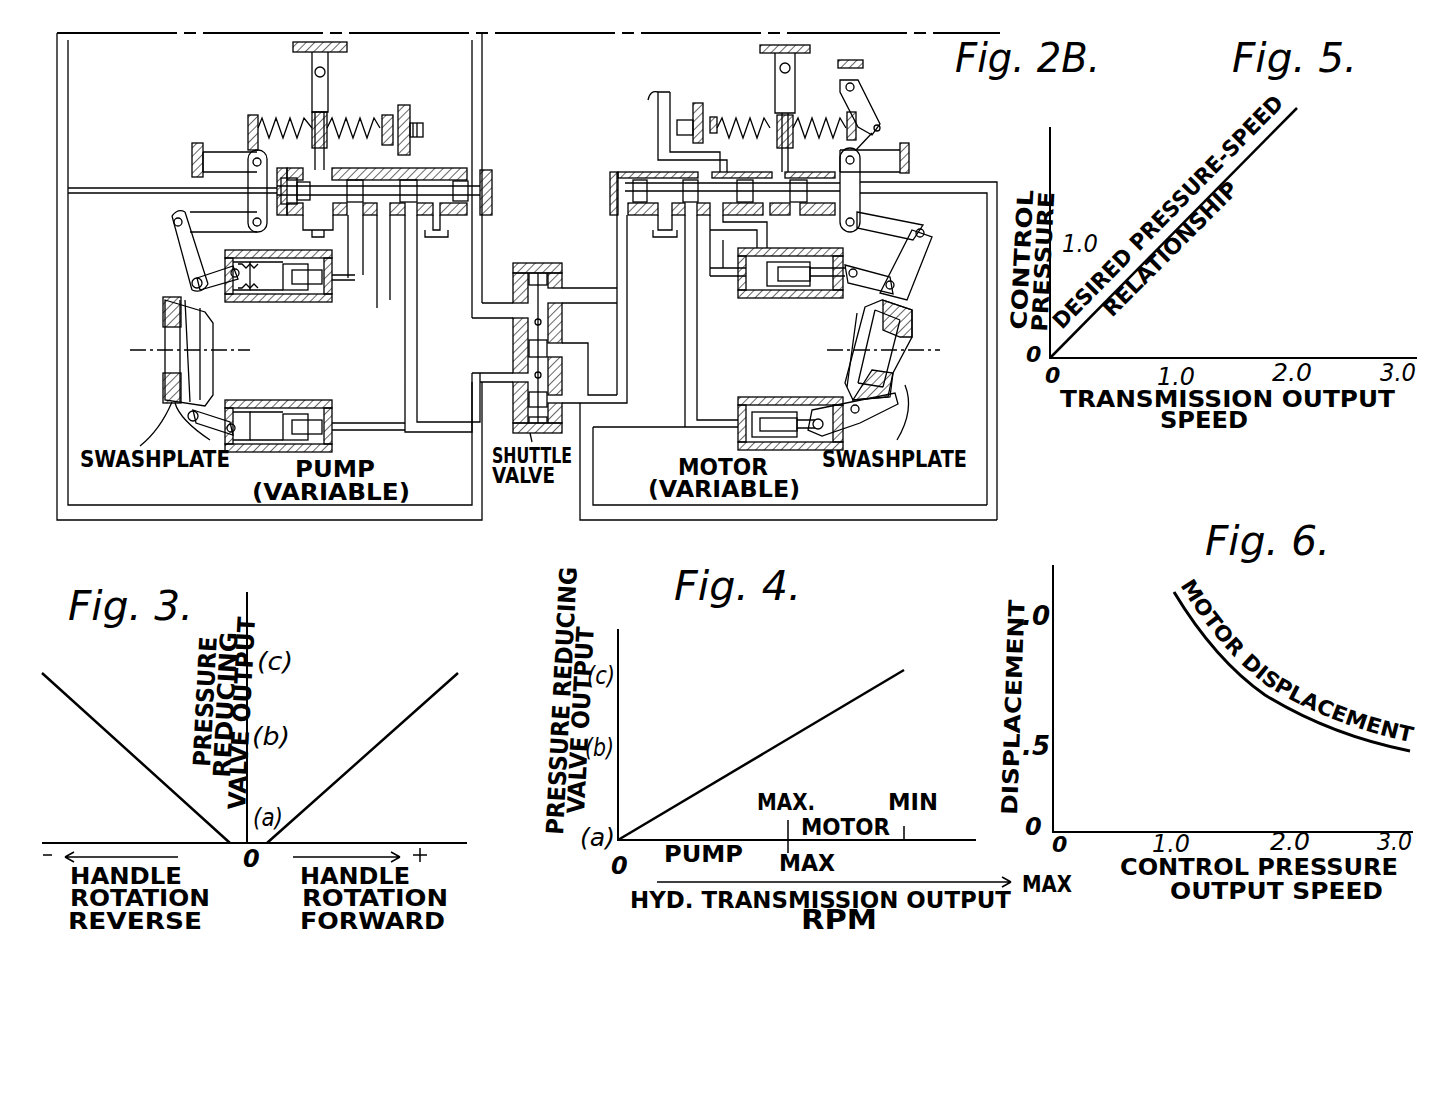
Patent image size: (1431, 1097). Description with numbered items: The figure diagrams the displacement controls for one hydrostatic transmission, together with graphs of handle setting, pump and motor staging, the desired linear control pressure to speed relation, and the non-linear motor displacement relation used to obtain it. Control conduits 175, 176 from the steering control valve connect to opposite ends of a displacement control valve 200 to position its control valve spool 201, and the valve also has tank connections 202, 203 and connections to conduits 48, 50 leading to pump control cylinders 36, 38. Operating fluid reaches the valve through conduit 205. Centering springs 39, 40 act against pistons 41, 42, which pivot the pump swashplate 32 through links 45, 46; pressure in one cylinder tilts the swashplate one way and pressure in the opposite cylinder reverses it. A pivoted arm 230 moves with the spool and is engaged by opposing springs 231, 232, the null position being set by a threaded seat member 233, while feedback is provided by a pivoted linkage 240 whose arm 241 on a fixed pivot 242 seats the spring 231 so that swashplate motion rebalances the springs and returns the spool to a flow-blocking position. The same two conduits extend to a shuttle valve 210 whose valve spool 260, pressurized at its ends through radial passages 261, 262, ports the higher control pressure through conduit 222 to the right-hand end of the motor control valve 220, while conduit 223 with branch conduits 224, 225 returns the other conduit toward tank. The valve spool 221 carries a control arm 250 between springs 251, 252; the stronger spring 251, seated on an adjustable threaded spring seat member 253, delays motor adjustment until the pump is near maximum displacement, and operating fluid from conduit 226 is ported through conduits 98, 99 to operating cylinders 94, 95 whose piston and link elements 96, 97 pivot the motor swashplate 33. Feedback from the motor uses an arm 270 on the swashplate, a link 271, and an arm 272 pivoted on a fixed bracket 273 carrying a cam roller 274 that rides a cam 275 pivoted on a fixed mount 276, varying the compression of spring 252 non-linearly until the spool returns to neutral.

The conduit 175 is at (70, 82).
The conduit 176 is at (478, 52).
The pivoted arm 230 is at (331, 68).
The spring 231 is at (280, 117).
The spring 232 is at (330, 120).
The threaded seat member 233 is at (393, 112).
The displacement control valve 200 is at (458, 168).
The arm 241 is at (250, 118).
The fixed pivot 242 is at (203, 150).
The control valve spool 201 is at (486, 190).
The pivoted linkage 240 is at (188, 214).
The tank connection 202 is at (312, 233).
The tank connection 203 is at (442, 237).
The link 45 is at (200, 276).
The pump swashplate 32 is at (165, 320).
The piston 41 is at (232, 302).
The spring construction 39 is at (283, 302).
The pump control cylinder 36 is at (308, 302).
The conduit 48 is at (343, 286).
The conduit 205 is at (385, 313).
The link 46 is at (216, 412).
The spring construction 40 is at (294, 412).
The pump control cylinder 38 is at (340, 412).
The conduit 50 is at (435, 417).
The piston 42 is at (243, 452).
The shuttle valve 210 is at (528, 265).
The conduit 223 is at (615, 243).
The branch conduit 224 is at (588, 292).
The radial passage 261 is at (535, 326).
The valve spool 260 is at (513, 364).
The radial passage 262 is at (548, 365).
The conduit 226 is at (656, 100).
The control valve 220 is at (643, 176).
The valve spool 221 is at (668, 230).
The threaded spring seat member 253 is at (699, 102).
The spring 251 is at (738, 120).
The spring 252 is at (813, 120).
The control arm 250 is at (799, 70).
The fixed mount 276 is at (865, 70).
The cam 275 is at (860, 118).
The cam roller 274 is at (874, 130).
The fixed bracket 273 is at (897, 154).
The arm 272 is at (860, 212).
The link 271 is at (902, 230).
The arm 270 is at (910, 273).
The piston and link element 96 is at (814, 253).
The conduit 98 is at (727, 282).
The operating cylinder 94 is at (782, 300).
The swashplate 33 is at (913, 318).
The operating cylinder 95 is at (745, 397).
The piston and link element 97 is at (826, 408).
The conduit 222 is at (987, 372).
The conduit 99 is at (686, 412).
The branch conduit 225 is at (600, 430).